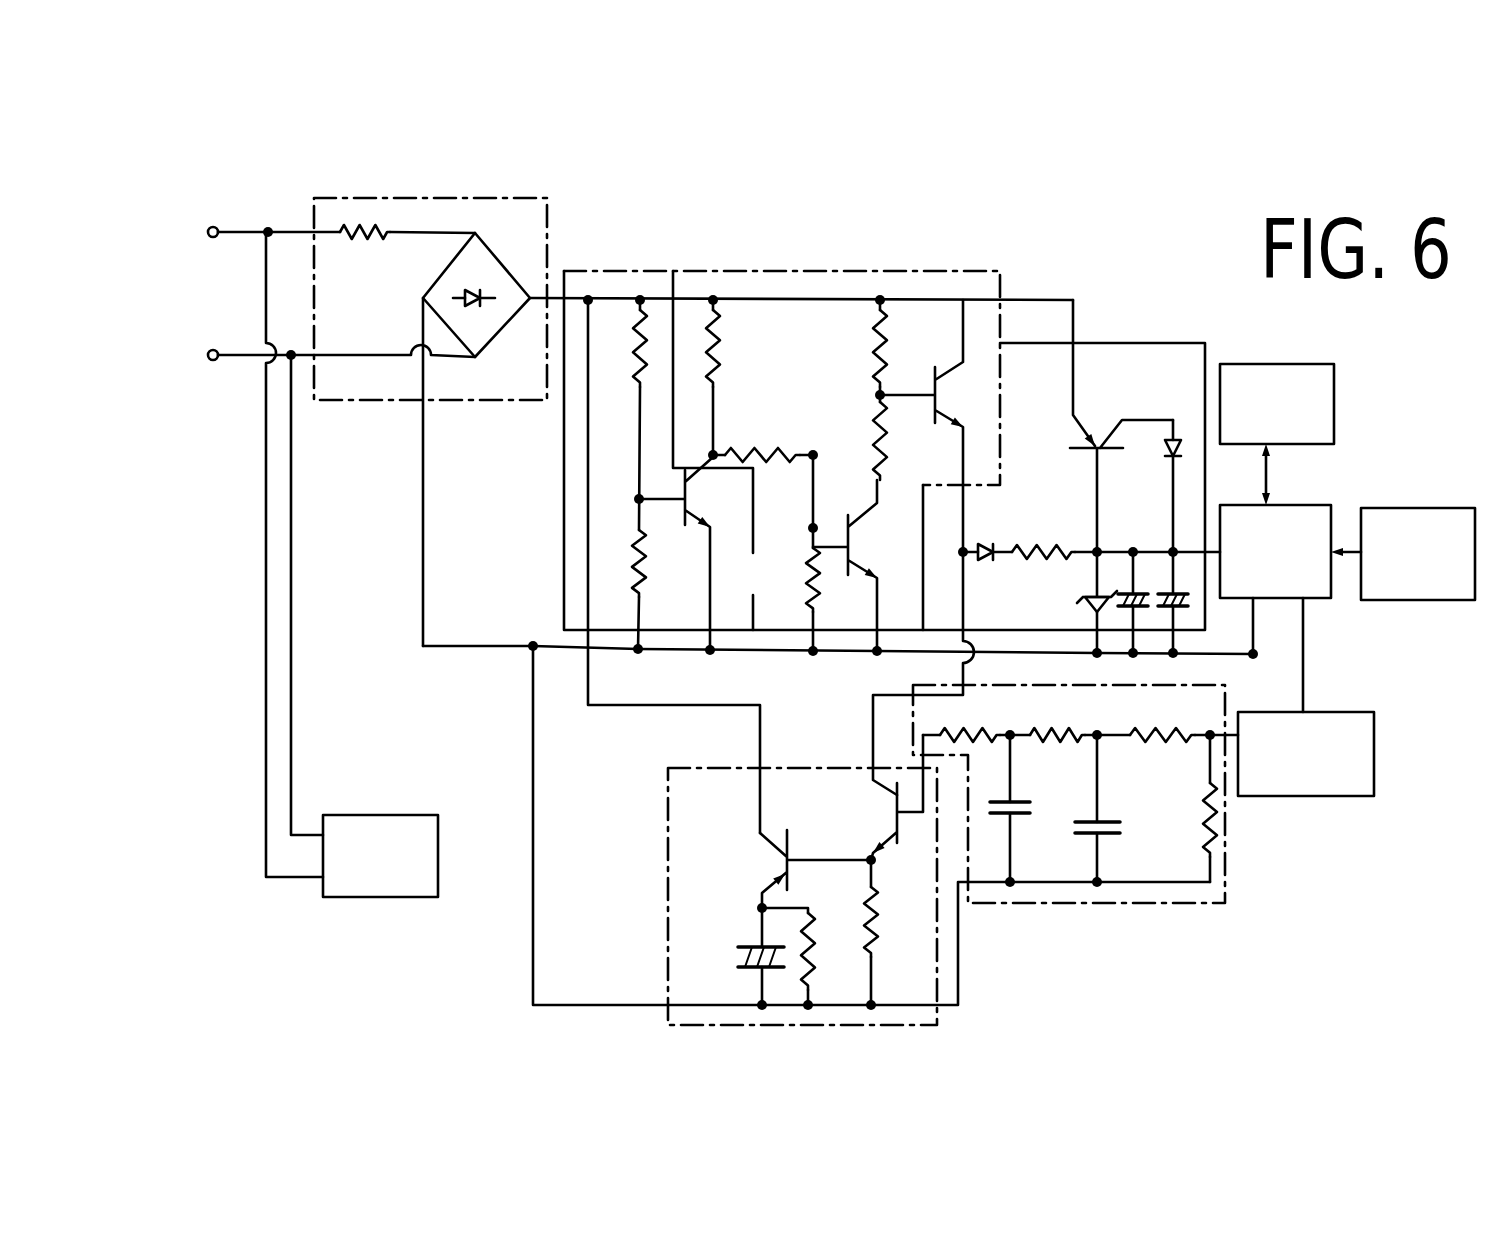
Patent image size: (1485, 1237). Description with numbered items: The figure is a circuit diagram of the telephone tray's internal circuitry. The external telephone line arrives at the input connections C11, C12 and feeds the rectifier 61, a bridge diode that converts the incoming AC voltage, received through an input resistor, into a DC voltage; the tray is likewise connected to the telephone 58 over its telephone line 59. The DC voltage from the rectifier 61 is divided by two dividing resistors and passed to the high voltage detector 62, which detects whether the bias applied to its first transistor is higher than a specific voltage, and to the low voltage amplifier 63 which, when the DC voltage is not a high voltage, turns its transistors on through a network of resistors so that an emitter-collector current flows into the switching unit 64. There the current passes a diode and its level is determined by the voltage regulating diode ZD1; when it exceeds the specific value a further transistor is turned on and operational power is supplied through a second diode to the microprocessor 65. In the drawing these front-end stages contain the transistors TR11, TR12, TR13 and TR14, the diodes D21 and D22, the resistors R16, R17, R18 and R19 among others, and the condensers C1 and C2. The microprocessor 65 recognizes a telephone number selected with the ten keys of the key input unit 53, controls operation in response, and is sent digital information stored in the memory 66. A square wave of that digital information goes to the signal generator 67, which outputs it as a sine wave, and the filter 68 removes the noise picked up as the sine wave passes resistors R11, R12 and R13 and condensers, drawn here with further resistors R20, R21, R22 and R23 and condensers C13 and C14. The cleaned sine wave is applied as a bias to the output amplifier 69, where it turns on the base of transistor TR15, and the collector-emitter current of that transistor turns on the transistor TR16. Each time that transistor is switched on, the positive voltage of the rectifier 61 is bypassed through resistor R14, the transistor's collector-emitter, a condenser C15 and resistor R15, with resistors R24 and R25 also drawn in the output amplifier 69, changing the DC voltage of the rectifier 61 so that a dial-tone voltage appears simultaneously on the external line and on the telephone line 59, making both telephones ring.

The input terminal C11 is at (274, 203).
The input terminal C12 is at (339, 327).
The resistor R11 is at (405, 259).
The rectifier 61 is at (473, 400).
The high voltage detector 62 is at (622, 271).
The low voltage amplifier 63 is at (878, 271).
The switching unit 64 is at (1186, 343).
The telephone 58 is at (358, 878).
The telephone line 59 is at (273, 877).
The memory 66 is at (1255, 426).
The microprocessor 65 is at (1253, 573).
The key input unit 53 is at (1396, 576).
The signal generator 67 is at (1284, 776).
The filter 68 is at (1082, 903).
The output amplifier 69 is at (668, 848).
The resistor R12 is at (610, 415).
The resistor R13 is at (607, 589).
The resistor R14 is at (748, 377).
The resistor R15 is at (763, 433).
The resistor R16 is at (781, 553).
The resistor R17 is at (847, 351).
The resistor R18 is at (849, 435).
The resistor R19 is at (1042, 540).
The resistor R20 is at (1178, 808).
The resistor R21 is at (1172, 757).
The resistor R22 is at (1080, 714).
The resistor R23 is at (976, 714).
The resistor R24 is at (873, 927).
The resistor R25 is at (808, 947).
The transistor TR11 is at (694, 554).
The transistor TR12 is at (867, 565).
The transistor TR13 is at (933, 367).
The transistor TR14 is at (1105, 423).
The transistor TR15 is at (887, 820).
The transistor TR16 is at (779, 871).
The diode D21 is at (979, 529).
The diode D22 is at (1171, 443).
The voltage regulating diode ZD1 is at (1078, 599).
The capacitor C1 is at (1130, 590).
The capacitor C2 is at (1190, 600).
The capacitor C13 is at (1100, 837).
The capacitor C14 is at (1017, 803).
The capacitor C15 is at (740, 960).